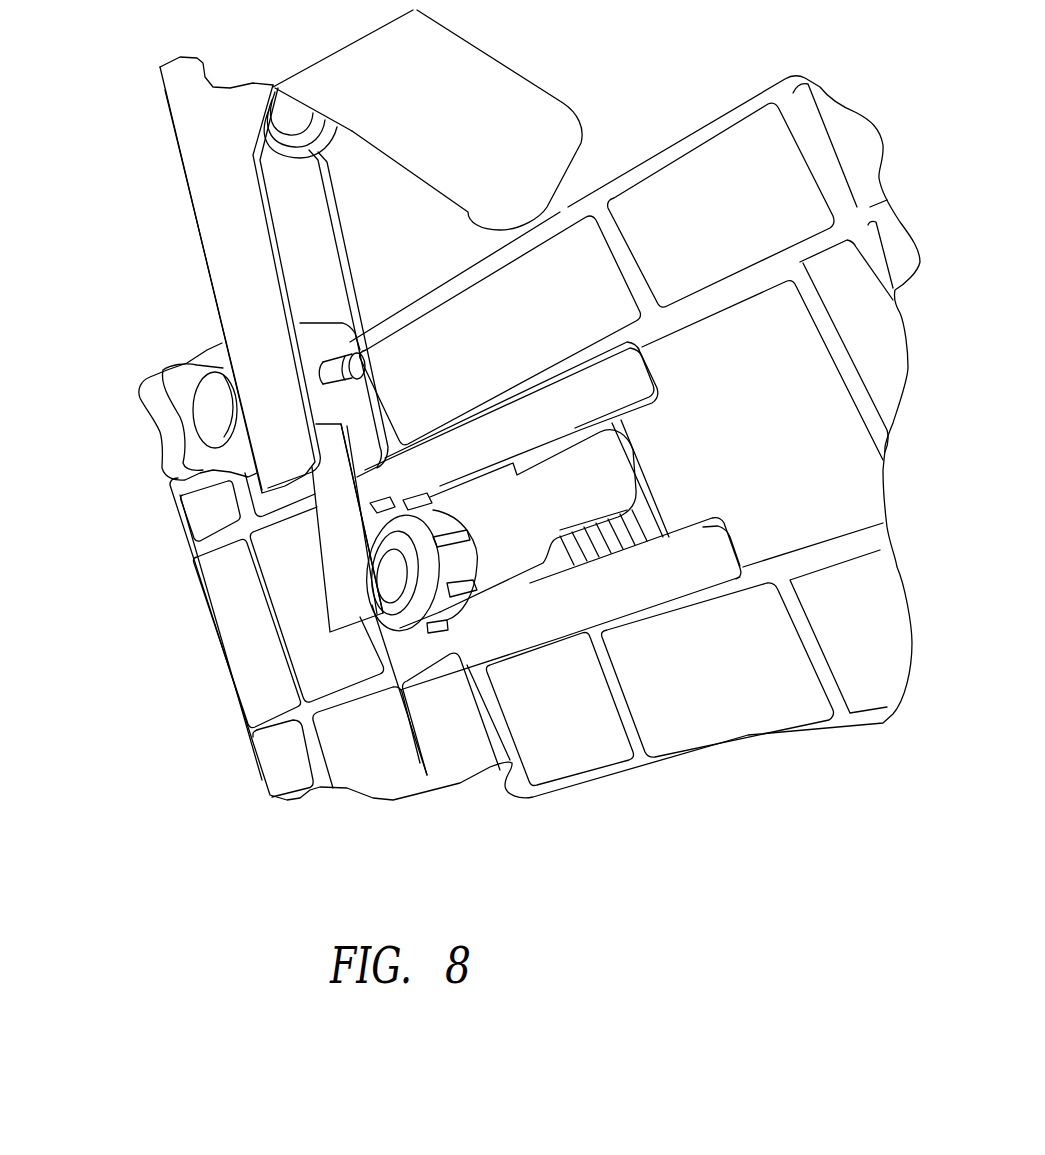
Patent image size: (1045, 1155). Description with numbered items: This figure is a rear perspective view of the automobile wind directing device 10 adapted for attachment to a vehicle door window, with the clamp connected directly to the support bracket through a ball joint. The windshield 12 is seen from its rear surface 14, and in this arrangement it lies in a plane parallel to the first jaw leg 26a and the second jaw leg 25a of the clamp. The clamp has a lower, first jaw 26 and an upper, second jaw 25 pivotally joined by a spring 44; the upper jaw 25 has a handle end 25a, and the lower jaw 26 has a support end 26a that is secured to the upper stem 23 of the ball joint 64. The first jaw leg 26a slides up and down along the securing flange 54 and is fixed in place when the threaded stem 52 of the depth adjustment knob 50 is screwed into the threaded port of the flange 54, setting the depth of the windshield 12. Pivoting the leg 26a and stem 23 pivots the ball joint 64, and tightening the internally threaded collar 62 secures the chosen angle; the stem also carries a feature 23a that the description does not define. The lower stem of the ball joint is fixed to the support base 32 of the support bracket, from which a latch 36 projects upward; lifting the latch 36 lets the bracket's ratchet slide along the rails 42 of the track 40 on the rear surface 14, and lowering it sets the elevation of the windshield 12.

The automobile wind directing device 10 is at (600, 60).
The windshield 12 is at (840, 730).
The rear surface 14 is at (573, 750).
The upper stem 23 is at (337, 563).
The slide bar edge 23a is at (383, 577).
The second jaw 25 is at (347, 53).
The handle end 25a is at (447, 60).
The first jaw 26 is at (183, 90).
The first leg 26a is at (200, 140).
The support base 32 is at (507, 550).
The latch 36 is at (570, 508).
The track 40 is at (430, 655).
The track rails 42 is at (617, 533).
The spring 44 is at (322, 137).
The depth adjustment knob 50 is at (148, 378).
The threaded stem 52 is at (325, 367).
The securing flange 54 is at (329, 337).
The collar 62 is at (393, 623).
The ball joint 64 is at (407, 550).